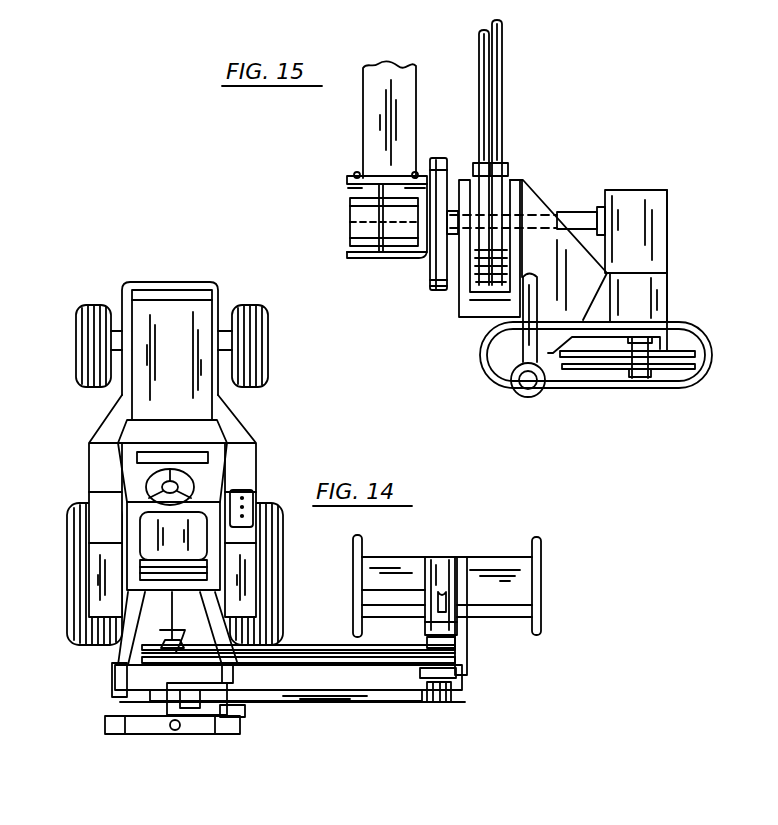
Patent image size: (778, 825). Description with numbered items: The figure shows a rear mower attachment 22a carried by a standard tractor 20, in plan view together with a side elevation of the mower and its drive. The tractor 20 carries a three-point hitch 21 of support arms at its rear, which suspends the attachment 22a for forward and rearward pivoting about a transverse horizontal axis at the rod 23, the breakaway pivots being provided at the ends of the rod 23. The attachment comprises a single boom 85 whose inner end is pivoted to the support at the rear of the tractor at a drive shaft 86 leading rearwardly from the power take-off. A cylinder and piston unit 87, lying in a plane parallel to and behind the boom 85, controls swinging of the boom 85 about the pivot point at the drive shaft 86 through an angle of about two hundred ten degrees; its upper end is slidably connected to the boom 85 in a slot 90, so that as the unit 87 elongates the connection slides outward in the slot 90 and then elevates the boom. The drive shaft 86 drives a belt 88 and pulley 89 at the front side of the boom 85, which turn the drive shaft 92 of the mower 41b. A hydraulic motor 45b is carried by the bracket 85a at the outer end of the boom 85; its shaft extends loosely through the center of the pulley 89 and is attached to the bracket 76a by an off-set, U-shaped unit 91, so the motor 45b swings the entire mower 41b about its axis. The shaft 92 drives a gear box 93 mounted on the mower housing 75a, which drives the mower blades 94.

In FIG. 14, the tractor 20 is at (256, 430).
In FIG. 14, the hitch 21 is at (228, 613).
In FIG. 14, the attachment 22a is at (352, 703).
In FIG. 14, the rod 23 is at (118, 670).
In FIG. 15, the mower 41b is at (668, 292).
In FIG. 14, the mower 41b is at (503, 553).
In FIG. 15, the hydraulic motor 45b is at (350, 226).
In FIG. 14, the hydraulic motor 45b is at (438, 702).
In FIG. 15, the mower housing 75a is at (666, 307).
In FIG. 14, the mower housing 75a is at (398, 555).
In FIG. 15, the bracket 76a is at (535, 205).
In FIG. 14, the bracket 76a is at (458, 625).
In FIG. 15, the boom 85 is at (370, 126).
In FIG. 14, the boom 85 is at (298, 700).
In FIG. 15, the bracket 85a is at (392, 258).
In FIG. 14, the drive shaft 86 is at (160, 630).
In FIG. 14, the cylinder and piston unit 87 is at (188, 708).
In FIG. 15, the belt 88 is at (482, 78).
In FIG. 14, the belt 88 is at (292, 655).
In FIG. 15, the pulley 89 is at (505, 170).
In FIG. 14, the pulley 89 is at (428, 640).
In FIG. 14, the slot 90 is at (236, 716).
In FIG. 15, the U-shaped unit 91 is at (460, 304).
In FIG. 14, the U-shaped unit 91 is at (470, 672).
In FIG. 15, the drive shaft 92 is at (590, 210).
In FIG. 14, the drive shaft 92 is at (438, 600).
In FIG. 15, the gear box 93 is at (660, 220).
In FIG. 14, the gear box 93 is at (438, 579).
In FIG. 15, the mower blades 94 is at (660, 370).